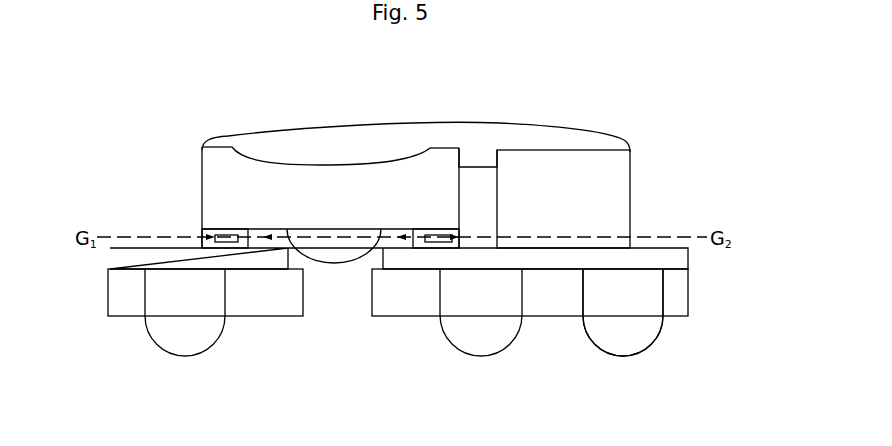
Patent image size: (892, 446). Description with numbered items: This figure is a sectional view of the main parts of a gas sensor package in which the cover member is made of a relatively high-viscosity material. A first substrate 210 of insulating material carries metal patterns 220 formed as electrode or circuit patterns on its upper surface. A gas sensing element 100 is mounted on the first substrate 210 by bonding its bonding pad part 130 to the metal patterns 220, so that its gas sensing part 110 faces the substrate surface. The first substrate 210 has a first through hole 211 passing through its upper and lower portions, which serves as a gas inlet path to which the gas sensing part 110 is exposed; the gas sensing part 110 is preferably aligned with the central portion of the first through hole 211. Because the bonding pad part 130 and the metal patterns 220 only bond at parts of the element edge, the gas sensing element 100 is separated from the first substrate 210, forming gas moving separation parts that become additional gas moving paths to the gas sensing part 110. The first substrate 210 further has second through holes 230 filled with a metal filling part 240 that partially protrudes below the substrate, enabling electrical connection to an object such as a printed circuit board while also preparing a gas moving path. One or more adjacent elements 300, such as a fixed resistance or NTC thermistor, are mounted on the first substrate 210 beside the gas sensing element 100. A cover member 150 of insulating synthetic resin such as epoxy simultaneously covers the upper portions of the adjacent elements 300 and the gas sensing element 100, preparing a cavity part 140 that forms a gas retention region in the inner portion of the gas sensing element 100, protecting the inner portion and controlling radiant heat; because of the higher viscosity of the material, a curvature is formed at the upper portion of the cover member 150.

The gas sensing element 100 is at (410, 200).
The gas sensing part 110 is at (333, 264).
The bonding pad part 130 is at (202, 218).
The cavity part 140 is at (263, 168).
The cover member 150 is at (513, 125).
The first substrate 210 is at (688, 288).
The first through hole 211 is at (688, 255).
The metal patterns 220 is at (400, 322).
The second through holes 230 is at (664, 272).
The metal filling part 240 is at (622, 354).
The adjacent elements 300 is at (625, 180).